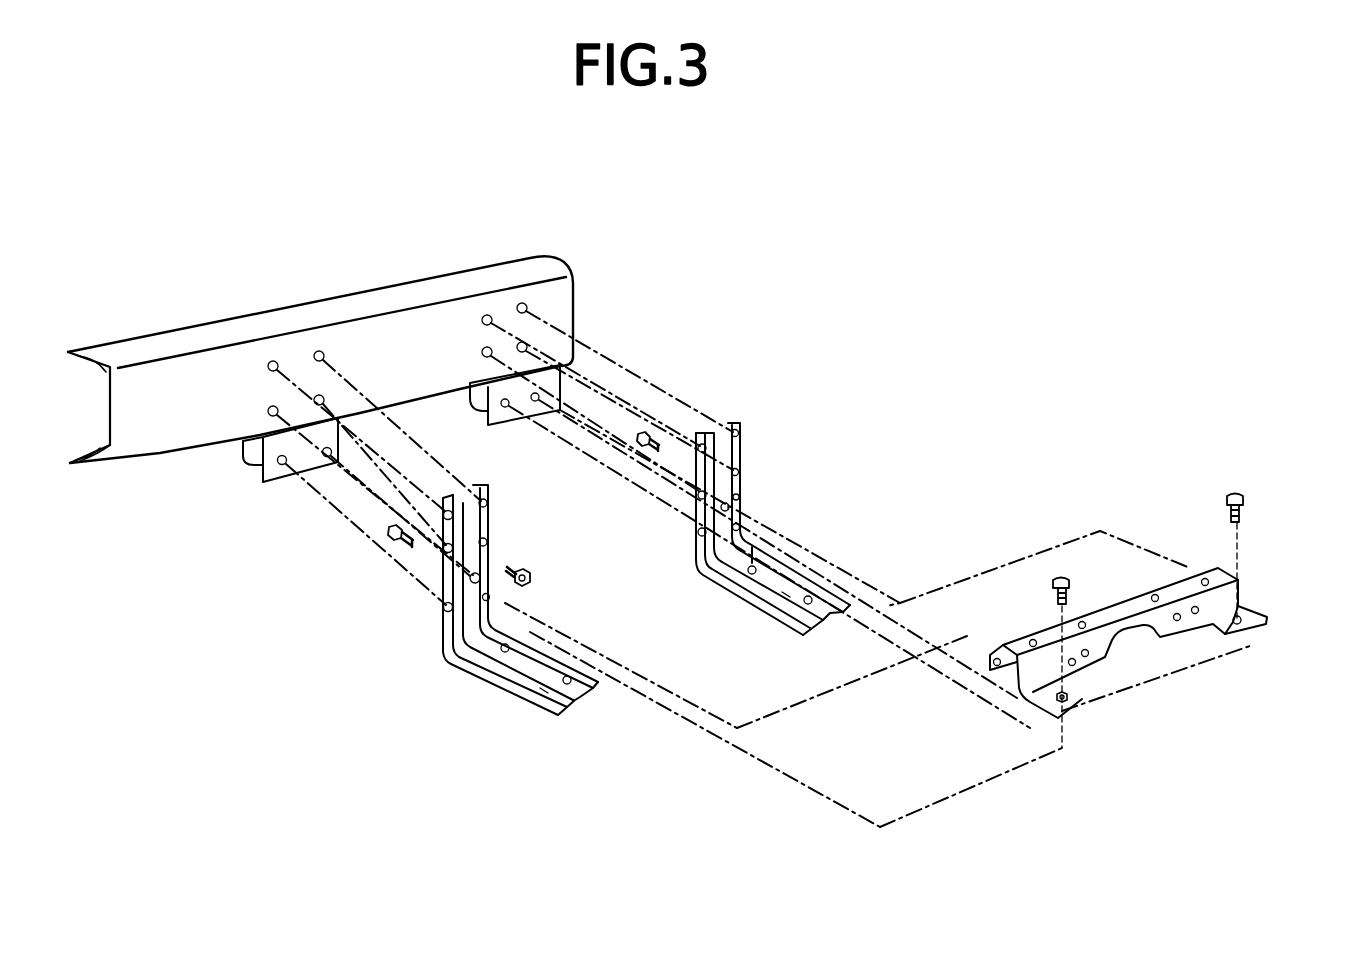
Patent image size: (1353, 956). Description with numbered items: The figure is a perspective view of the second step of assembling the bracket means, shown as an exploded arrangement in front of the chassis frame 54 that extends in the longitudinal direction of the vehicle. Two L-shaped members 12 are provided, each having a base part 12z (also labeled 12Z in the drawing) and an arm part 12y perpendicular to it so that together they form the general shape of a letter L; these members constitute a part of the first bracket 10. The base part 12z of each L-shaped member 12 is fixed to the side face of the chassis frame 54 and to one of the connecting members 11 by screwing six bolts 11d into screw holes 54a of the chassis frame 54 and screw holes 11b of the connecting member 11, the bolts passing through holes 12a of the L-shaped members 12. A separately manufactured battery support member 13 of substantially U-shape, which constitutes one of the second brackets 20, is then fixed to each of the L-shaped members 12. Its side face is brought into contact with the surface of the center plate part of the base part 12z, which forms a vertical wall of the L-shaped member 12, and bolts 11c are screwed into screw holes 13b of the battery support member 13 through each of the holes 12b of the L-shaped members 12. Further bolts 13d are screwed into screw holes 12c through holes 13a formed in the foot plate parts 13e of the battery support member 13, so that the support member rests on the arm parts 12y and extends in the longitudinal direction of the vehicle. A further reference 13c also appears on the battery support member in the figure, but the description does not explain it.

The first bracket 10 is at (322, 660).
The connecting member 11 is at (256, 465).
The screw hole 11b is at (283, 465).
The bolt 11c is at (393, 540).
The bolt 11d is at (532, 579).
The L-shaped member 12 is at (448, 665).
The hole 12a is at (473, 485).
The hole 12b is at (490, 586).
The screw hole 12c is at (505, 652).
The arm part 12y is at (535, 686).
The base part 12z is at (698, 528).
The base part 12Z is at (488, 540).
The battery support member 13 is at (1017, 652).
The hole 13a is at (1075, 702).
The screw hole 13b is at (988, 682).
The front face holes 13c is at (1090, 656).
The bolt 13d is at (1067, 582).
The foot plate part 13e is at (1262, 620).
The second bracket 20 is at (1126, 510).
The chassis frame 54 is at (182, 340).
The screw hole 54a is at (280, 358).